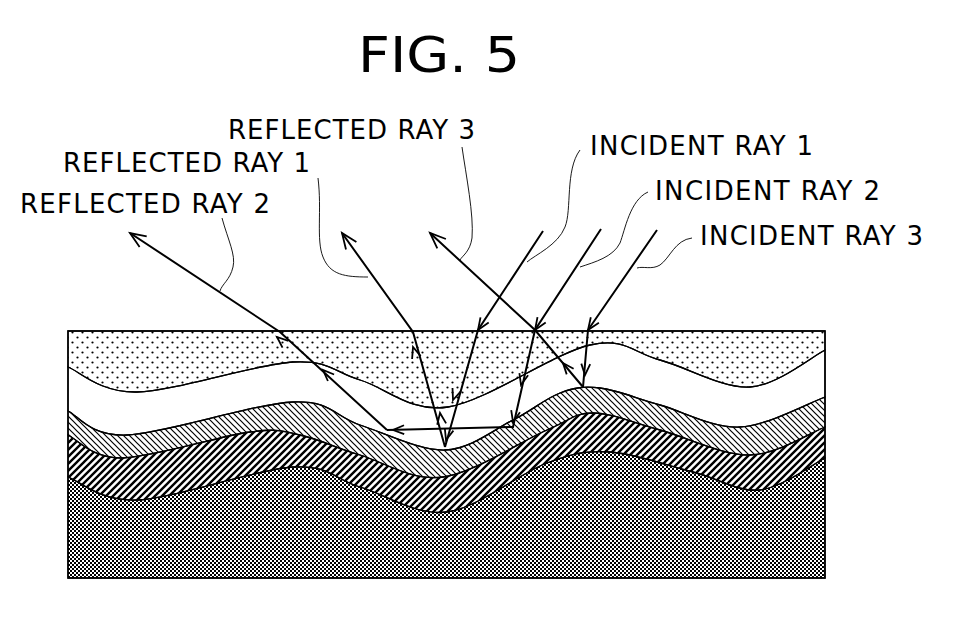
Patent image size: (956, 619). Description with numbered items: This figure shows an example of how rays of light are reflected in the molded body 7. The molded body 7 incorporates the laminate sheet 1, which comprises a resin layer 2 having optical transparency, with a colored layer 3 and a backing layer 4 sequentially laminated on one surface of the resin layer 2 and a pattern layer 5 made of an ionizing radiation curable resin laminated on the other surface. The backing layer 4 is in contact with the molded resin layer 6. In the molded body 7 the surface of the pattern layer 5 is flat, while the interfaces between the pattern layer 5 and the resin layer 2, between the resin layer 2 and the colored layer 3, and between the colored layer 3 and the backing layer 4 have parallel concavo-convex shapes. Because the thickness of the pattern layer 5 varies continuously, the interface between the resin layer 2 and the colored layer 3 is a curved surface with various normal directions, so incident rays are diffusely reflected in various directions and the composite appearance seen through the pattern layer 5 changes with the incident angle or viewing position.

The laminate sheet 1 is at (462, 408).
The resin layer 2 is at (810, 382).
The colored layer 3 is at (815, 422).
The backing layer 4 is at (825, 458).
The pattern layer 5 is at (812, 348).
The molded resin layer 6 is at (812, 497).
The molded body 7 is at (462, 424).